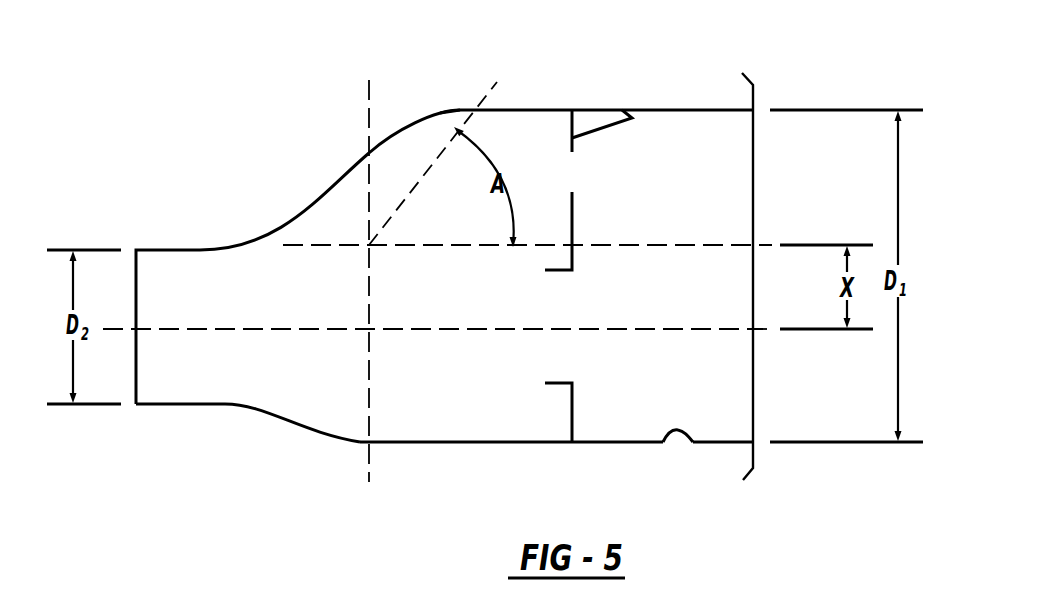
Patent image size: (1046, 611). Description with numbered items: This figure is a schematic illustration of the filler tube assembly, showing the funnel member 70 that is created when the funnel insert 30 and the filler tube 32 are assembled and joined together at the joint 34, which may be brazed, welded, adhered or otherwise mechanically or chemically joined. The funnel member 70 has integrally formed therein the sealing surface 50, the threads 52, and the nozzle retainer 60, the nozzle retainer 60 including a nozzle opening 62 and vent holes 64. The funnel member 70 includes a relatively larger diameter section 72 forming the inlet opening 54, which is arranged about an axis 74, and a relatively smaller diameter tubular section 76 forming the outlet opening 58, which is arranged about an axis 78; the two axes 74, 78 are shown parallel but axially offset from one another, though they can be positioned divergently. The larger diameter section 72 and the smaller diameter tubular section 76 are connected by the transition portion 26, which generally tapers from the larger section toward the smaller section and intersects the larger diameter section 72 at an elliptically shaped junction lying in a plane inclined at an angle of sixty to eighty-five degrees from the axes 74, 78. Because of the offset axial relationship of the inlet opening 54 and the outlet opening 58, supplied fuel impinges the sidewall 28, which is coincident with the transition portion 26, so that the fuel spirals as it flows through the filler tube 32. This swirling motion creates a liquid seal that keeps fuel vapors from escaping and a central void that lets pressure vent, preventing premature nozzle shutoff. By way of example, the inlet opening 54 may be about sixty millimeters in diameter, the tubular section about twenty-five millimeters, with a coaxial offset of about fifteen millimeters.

The transition portion 26 is at (396, 131).
The sidewall 28 is at (397, 138).
The funnel insert 30 is at (704, 105).
The filler tube 32 is at (447, 106).
The joint 34 is at (588, 110).
The sealing surface 50 is at (755, 470).
The threads 52 is at (675, 433).
The inlet opening 54 is at (727, 170).
The outlet opening 58 is at (197, 279).
The nozzle retainer 60 is at (630, 116).
The nozzle opening 62 is at (547, 352).
The vent holes 64 is at (573, 175).
The funnel member 70 is at (300, 162).
The larger diameter section 72 is at (537, 110).
The axis 74 is at (615, 247).
The smaller diameter tubular section 76 is at (148, 406).
The axis 78 is at (307, 352).